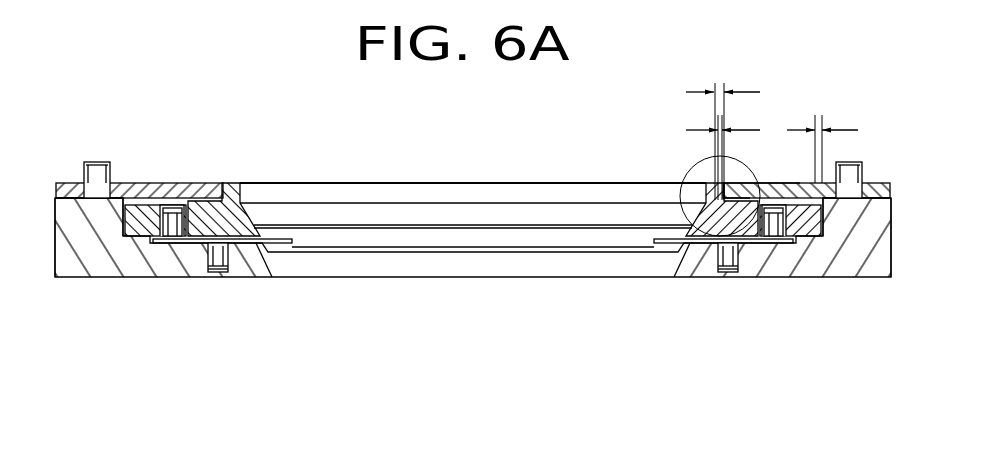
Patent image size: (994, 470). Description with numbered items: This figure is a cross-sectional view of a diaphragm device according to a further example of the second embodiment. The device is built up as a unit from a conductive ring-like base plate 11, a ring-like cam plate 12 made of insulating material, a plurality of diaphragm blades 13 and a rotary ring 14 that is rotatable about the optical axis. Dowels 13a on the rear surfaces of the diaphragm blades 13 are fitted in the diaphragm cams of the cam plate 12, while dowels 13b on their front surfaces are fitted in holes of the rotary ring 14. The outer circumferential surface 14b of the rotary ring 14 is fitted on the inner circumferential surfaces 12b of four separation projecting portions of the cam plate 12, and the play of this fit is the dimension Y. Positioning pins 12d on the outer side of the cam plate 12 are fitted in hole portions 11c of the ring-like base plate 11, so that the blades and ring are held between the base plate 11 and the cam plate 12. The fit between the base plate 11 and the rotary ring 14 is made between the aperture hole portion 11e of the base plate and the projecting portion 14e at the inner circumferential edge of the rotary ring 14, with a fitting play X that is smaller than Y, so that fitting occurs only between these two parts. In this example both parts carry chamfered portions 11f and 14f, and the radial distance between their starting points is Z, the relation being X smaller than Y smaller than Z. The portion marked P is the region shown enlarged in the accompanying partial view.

The ring-like base plate 11 is at (66, 173).
The hole portions 11c is at (73, 200).
The aperture hole portion 11e is at (730, 181).
The chamfered portion 11f is at (693, 249).
The cam plate 12 is at (158, 282).
The inner circumferential surfaces 12b is at (107, 200).
The positioning pins 12d is at (96, 175).
The diaphragm blades 13 is at (274, 250).
The dowels 13a is at (215, 257).
The dowels 13b is at (173, 212).
The rotary ring 14 is at (145, 194).
The outer circumferential surface 14b is at (813, 225).
The projecting portion 14e is at (700, 182).
The chamfered portion 14f is at (725, 184).
The portion P is at (700, 175).
The fitting play X is at (762, 127).
The fitting play Y is at (823, 140).
The radial distance Z is at (762, 86).